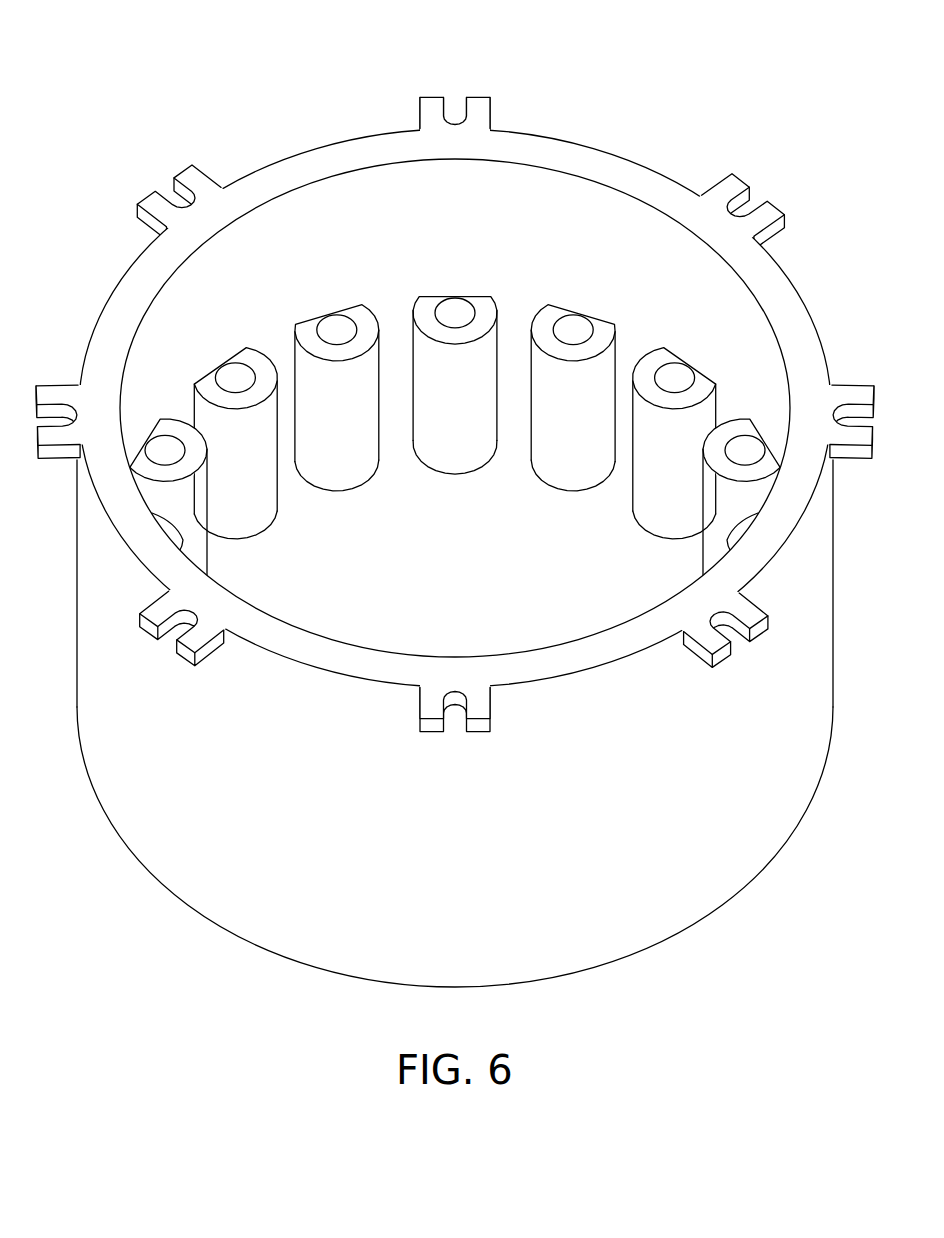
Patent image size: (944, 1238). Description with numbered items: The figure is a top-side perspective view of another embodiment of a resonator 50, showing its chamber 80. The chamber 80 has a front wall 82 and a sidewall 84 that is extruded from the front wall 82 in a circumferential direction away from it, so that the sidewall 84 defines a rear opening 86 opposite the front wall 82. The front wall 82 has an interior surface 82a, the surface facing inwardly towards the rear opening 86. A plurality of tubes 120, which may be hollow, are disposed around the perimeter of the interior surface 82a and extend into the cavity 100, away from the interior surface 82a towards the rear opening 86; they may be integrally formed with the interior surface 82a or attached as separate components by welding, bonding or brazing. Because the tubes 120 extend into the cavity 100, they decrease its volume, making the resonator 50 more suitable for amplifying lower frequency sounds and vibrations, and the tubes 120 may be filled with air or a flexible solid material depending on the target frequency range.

The resonator 50 is at (459, 503).
The chamber 80 is at (459, 542).
The front wall 82 is at (355, 500).
The interior surface 82a is at (470, 587).
The sidewall 84 is at (112, 801).
The rear opening 86 is at (285, 633).
The cavity 100 is at (455, 414).
The plurality of tubes 120 is at (322, 375).